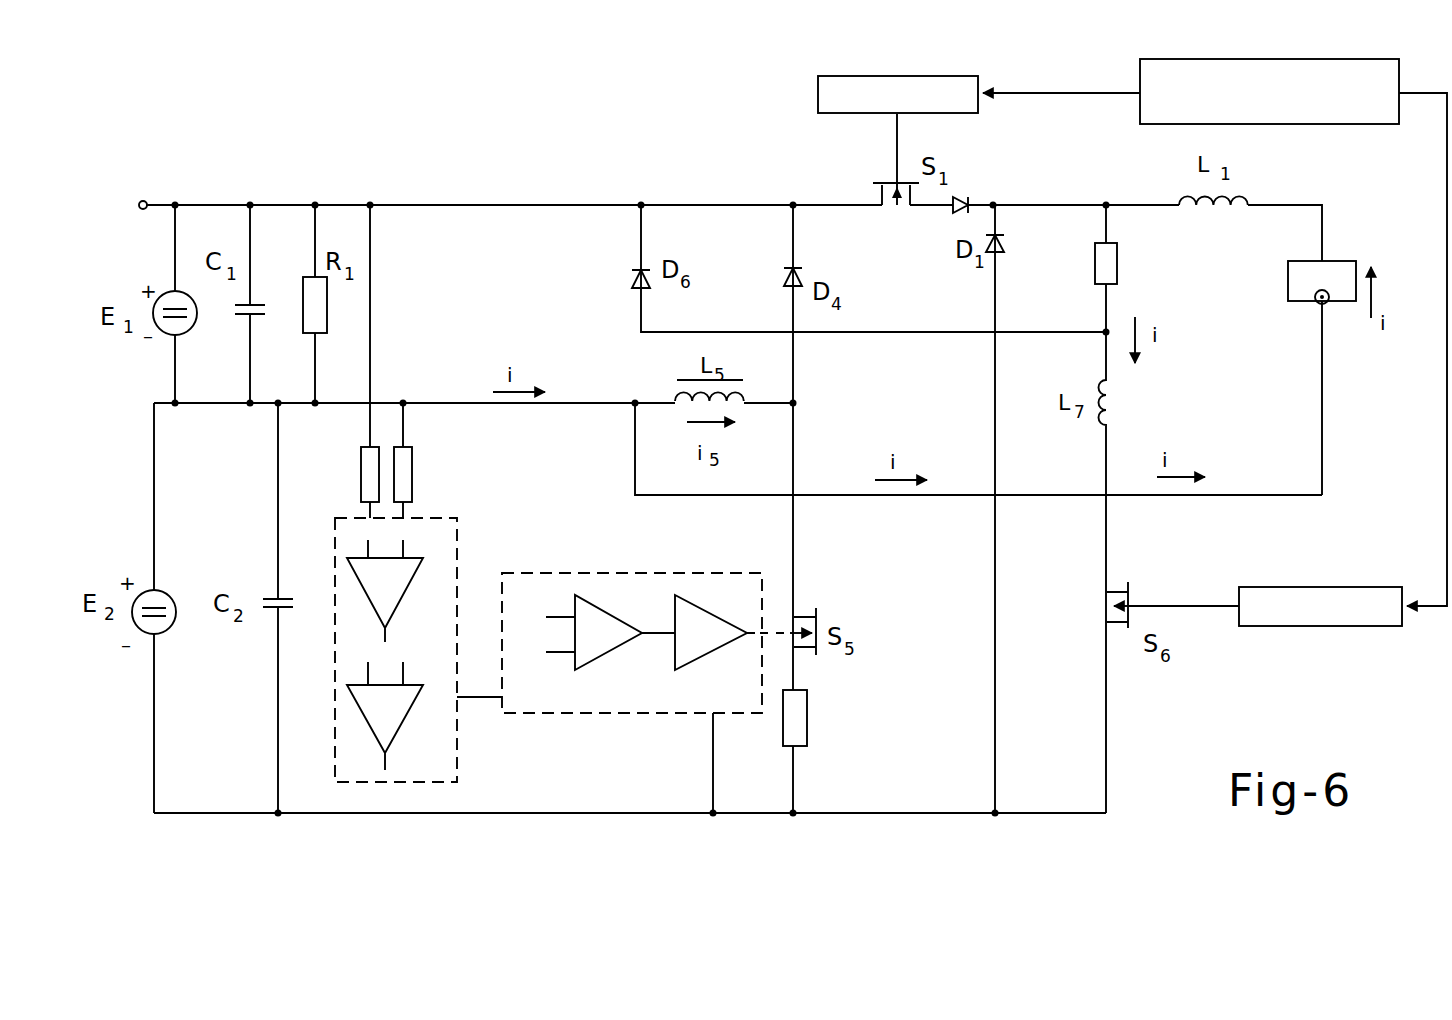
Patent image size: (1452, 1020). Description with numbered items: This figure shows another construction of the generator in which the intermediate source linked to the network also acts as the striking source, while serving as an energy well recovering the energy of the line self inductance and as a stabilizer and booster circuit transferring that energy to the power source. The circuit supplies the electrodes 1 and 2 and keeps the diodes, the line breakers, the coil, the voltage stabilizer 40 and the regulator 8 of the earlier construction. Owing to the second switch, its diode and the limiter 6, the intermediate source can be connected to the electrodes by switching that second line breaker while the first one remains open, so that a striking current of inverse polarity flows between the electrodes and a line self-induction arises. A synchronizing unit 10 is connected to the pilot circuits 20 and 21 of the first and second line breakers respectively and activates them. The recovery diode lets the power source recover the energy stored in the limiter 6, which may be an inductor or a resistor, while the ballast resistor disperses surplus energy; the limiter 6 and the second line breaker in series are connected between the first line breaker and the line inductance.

The electrode 1 is at (1316, 303).
The electrode 2 is at (1298, 274).
The limiter 6 is at (1094, 262).
The regulator 8 is at (687, 705).
The synchronizing unit 10 is at (1170, 124).
The pilot circuit 20 is at (842, 113).
The pilot circuit 21 is at (1303, 626).
The voltage stabilizer 40 is at (440, 751).